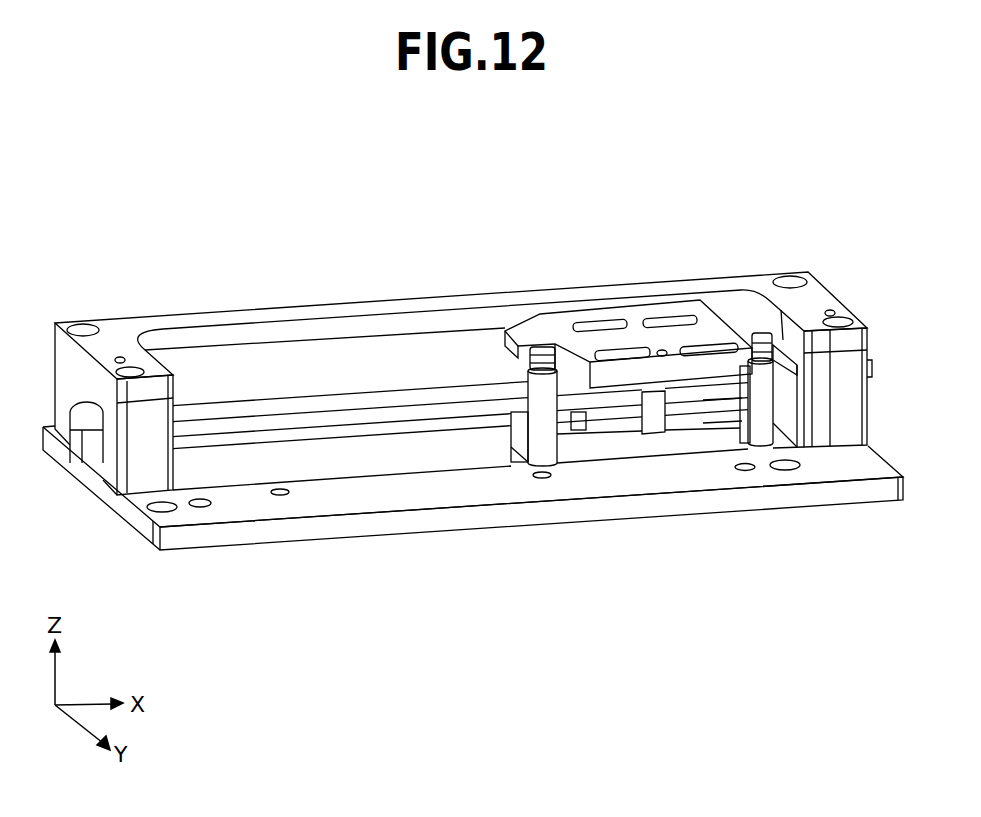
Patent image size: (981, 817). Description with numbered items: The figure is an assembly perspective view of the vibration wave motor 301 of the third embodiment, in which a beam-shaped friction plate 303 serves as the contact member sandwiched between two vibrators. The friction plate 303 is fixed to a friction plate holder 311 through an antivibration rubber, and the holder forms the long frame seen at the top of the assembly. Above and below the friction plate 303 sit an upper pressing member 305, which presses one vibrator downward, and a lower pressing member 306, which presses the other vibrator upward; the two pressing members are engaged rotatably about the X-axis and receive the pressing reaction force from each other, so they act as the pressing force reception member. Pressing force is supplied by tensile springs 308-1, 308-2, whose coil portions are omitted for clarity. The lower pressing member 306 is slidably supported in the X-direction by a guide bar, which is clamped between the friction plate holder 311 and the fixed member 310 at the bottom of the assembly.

The vibration wave motor 301 is at (797, 168).
The friction plate 303 is at (233, 410).
The upper pressing member 305 is at (630, 317).
The lower pressing member 306 is at (643, 440).
The tensile spring 308-1 is at (760, 437).
The tensile spring 308-2 is at (511, 452).
The fixed member 310 is at (323, 532).
The friction plate holder 311 is at (309, 313).